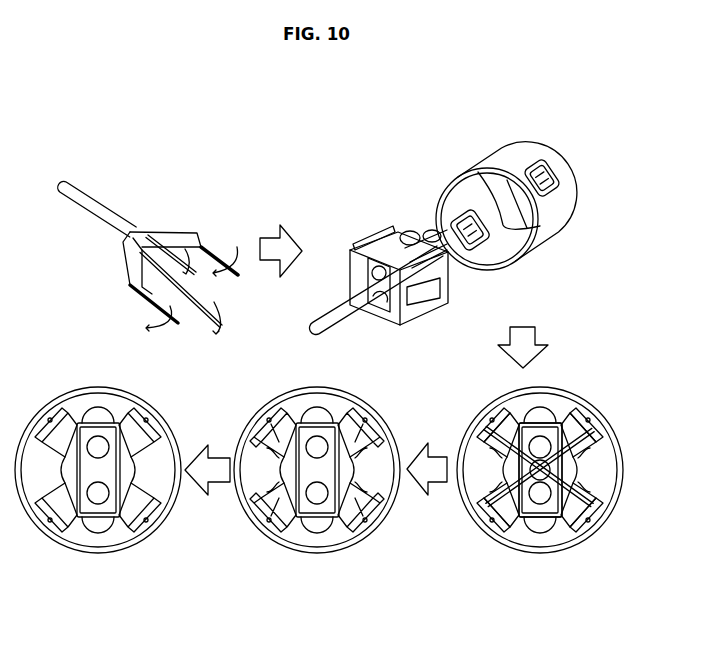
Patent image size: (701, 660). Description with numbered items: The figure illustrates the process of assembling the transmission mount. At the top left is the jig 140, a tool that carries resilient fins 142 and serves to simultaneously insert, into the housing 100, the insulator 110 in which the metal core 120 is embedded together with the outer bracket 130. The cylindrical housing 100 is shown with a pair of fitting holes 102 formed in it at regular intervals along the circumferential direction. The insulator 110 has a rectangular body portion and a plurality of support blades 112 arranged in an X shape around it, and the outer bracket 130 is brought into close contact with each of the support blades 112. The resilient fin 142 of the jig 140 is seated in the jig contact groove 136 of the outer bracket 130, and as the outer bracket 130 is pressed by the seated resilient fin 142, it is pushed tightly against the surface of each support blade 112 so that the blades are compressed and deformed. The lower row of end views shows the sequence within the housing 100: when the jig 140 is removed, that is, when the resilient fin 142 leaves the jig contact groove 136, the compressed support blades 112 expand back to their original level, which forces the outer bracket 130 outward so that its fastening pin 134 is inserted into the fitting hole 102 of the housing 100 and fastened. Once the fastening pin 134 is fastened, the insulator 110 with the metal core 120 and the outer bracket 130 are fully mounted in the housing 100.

The housing 100 is at (538, 250).
The fitting hole 102 is at (553, 188).
The insulator 110 is at (405, 237).
The support blade 112 is at (583, 495).
The metal core 120 is at (530, 508).
The outer bracket 130 is at (482, 430).
The fastening pin 134 is at (367, 247).
The jig contact groove 136 is at (275, 423).
The jig 140 is at (107, 203).
The resilient fin 142 is at (219, 250).